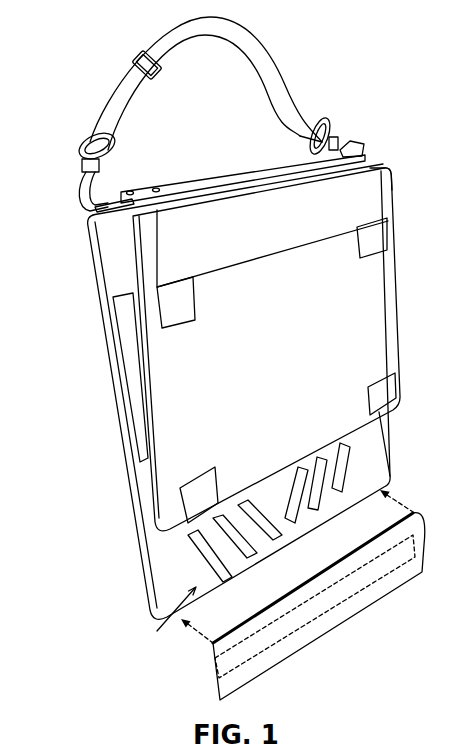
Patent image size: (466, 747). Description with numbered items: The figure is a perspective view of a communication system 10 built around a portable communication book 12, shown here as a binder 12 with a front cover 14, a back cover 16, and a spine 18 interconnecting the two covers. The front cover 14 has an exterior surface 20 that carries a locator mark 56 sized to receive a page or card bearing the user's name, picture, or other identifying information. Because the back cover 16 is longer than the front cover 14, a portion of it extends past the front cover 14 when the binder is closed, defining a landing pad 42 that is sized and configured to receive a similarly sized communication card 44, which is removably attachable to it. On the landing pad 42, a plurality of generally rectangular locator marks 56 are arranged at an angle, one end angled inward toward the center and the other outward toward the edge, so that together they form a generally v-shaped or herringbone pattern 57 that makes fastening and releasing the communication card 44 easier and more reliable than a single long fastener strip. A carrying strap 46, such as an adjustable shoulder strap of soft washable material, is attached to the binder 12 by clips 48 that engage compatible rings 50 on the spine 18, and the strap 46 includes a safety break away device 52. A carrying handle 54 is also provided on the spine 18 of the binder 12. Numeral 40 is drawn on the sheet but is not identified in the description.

The communication system 10 is at (316, 28).
The communication book 12 is at (113, 427).
The front cover 14 is at (398, 340).
The back cover 16 is at (385, 433).
The spine 18 is at (383, 157).
The exterior surface 20 is at (295, 370).
The bottom edge 40 is at (68, 744).
The landing pad 42 is at (380, 478).
The communication card 44 is at (408, 570).
The carrying strap 46 is at (110, 105).
The clips 48 is at (78, 200).
The rings 50 is at (107, 197).
The safety break away device 52 is at (150, 55).
The carrying handle 54 is at (203, 174).
The locator marks 56 is at (230, 264).
The herringbone pattern 57 is at (164, 625).